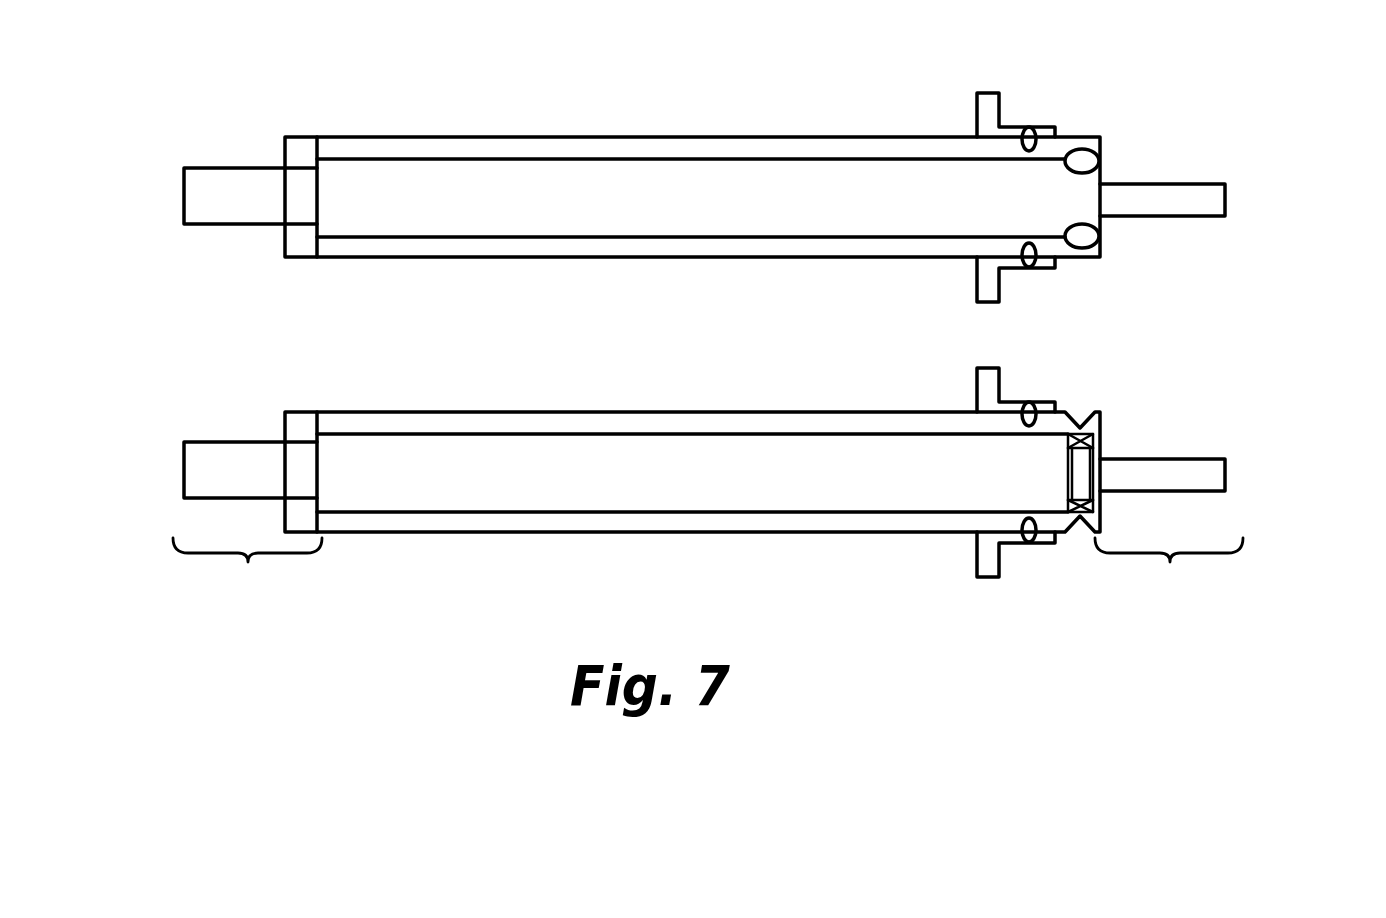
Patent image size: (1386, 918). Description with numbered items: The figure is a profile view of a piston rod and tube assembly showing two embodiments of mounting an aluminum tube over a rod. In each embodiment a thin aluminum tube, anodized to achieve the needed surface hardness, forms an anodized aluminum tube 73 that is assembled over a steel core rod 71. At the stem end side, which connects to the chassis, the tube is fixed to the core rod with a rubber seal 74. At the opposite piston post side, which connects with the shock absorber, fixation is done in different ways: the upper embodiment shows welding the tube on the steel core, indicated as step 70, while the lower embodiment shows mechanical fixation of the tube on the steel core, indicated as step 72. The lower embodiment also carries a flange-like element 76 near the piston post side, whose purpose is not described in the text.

The welding step 70 is at (105, 205).
The steel core rod 71 is at (492, 187).
The mechanical fixation step 72 is at (105, 485).
The anodized aluminum tube 73 is at (707, 136).
The rubber seal 74 is at (305, 422).
The mounting flange post 76 is at (1000, 382).